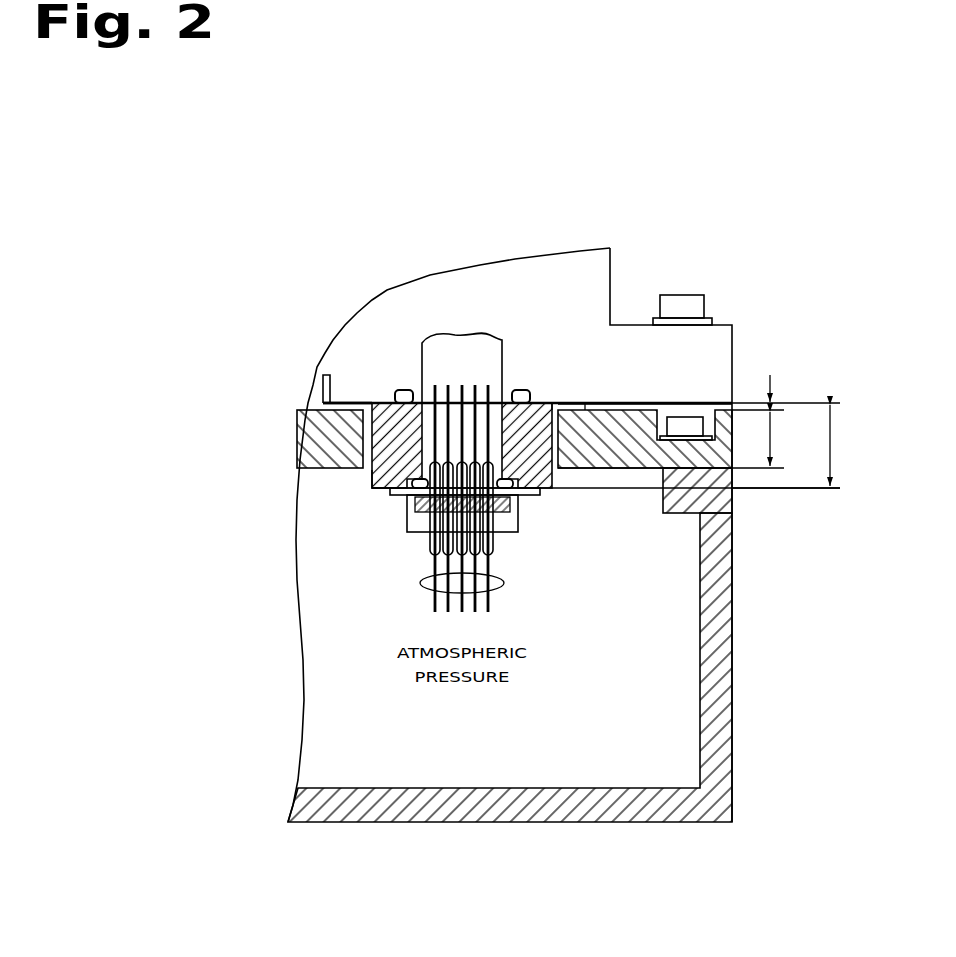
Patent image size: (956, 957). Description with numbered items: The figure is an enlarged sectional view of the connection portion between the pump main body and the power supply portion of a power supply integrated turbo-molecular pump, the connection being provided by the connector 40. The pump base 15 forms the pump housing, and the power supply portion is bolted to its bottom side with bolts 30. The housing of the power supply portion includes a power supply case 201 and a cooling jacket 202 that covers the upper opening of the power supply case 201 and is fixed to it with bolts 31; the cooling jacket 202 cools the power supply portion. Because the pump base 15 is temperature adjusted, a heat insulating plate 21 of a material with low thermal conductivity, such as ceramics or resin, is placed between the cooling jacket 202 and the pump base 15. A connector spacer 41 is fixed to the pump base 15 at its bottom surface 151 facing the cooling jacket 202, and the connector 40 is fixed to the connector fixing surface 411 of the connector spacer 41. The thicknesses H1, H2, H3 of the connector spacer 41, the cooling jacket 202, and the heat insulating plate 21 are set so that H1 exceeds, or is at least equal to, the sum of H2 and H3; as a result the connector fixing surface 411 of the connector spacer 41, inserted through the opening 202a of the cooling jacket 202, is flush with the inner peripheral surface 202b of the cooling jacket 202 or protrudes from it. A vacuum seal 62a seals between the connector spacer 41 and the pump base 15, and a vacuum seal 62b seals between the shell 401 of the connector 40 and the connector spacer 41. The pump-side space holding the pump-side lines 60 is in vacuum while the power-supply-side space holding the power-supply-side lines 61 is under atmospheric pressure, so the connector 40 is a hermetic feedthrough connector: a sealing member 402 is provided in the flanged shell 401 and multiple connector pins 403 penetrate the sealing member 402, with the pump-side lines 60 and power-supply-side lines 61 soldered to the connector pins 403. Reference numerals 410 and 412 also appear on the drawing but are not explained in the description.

The pump base 15 is at (598, 285).
The bottom surface 151 is at (303, 408).
The power supply case 201 is at (720, 675).
The cooling jacket 202 is at (303, 448).
The opening 202a is at (553, 401).
The inner peripheral surface 202b is at (622, 470).
The heat insulating plate 21 is at (673, 405).
The bolts 30 is at (692, 305).
The bolts 31 is at (725, 470).
The connector 40 is at (517, 535).
The shell 401 is at (395, 495).
The sealing member 402 is at (405, 523).
The connector pins 403 is at (433, 545).
The connector spacer 41 is at (537, 401).
The vacuum passage 410 is at (424, 401).
The connector fixing surface 411 is at (385, 488).
The upper flange portion 412 is at (383, 397).
The pump-side lines 60 is at (486, 390).
The power-supply-side lines 61 is at (497, 590).
The vacuum seal 62a is at (398, 392).
The vacuum seal 62b is at (513, 488).
The thickness of connector spacer H1 is at (798, 445).
The thickness of cooling jacket H2 is at (767, 439).
The thickness of heat insulating plate H3 is at (778, 402).